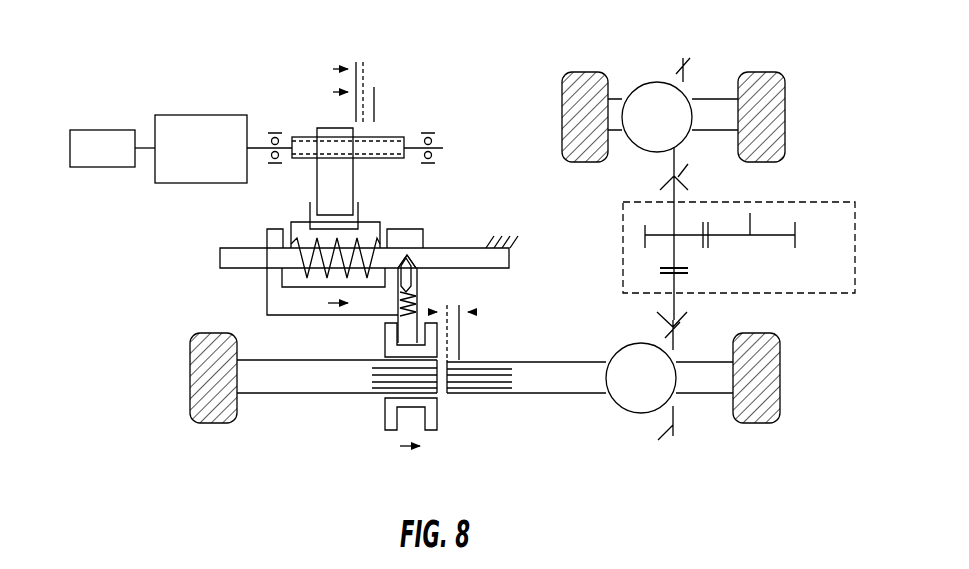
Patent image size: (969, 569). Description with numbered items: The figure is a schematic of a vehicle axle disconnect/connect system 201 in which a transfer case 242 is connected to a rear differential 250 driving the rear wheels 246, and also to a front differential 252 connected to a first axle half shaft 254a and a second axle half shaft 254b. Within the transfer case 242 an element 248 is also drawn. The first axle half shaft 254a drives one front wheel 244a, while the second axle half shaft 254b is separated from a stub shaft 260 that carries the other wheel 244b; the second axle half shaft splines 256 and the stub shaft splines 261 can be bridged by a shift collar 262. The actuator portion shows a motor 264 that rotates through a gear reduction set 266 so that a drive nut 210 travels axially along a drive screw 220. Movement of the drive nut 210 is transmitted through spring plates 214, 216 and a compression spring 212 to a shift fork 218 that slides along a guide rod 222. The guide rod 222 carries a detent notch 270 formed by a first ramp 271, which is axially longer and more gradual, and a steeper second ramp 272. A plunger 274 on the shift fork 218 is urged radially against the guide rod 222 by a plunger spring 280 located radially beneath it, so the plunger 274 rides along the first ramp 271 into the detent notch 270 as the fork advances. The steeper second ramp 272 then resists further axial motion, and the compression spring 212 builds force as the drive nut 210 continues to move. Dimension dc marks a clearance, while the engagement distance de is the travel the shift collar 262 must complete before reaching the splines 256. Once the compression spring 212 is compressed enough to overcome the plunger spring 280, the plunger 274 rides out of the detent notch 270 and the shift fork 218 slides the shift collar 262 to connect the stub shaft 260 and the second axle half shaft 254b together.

The vehicle axle disconnect/connect system 201 is at (62, 104).
The motor 264 is at (101, 130).
The gear reduction set 266 is at (197, 115).
The drive nut 210 is at (327, 128).
The drive screw 220 is at (385, 137).
The clearance distance dc is at (377, 74).
The engagement distance de is at (448, 210).
The guide rod 222 is at (222, 258).
The spring plate 214 is at (291, 226).
The spring plate 216 is at (362, 228).
The compression spring 212 is at (360, 242).
The shift fork 218 is at (267, 290).
The stub shaft splines 261 is at (442, 404).
The plunger 274 is at (413, 281).
The detent notch 270 is at (428, 259).
The first ramp 271 is at (410, 258).
The second ramp 272 is at (432, 253).
The plunger spring 280 is at (386, 310).
The shift collar 262 is at (385, 408).
The stub shaft 260 is at (285, 395).
The second axle half shaft splines 256 is at (474, 400).
The second axle half shaft 254b is at (570, 395).
The first axle half shaft 254a is at (698, 395).
The front differential 252 is at (657, 391).
The wheel 244b is at (206, 424).
The front wheel 244a is at (758, 424).
The rear wheels 246 is at (562, 95).
The rear differential 250 is at (673, 130).
The transfer case 242 is at (856, 245).
The disconnect clutch 248 is at (699, 271).